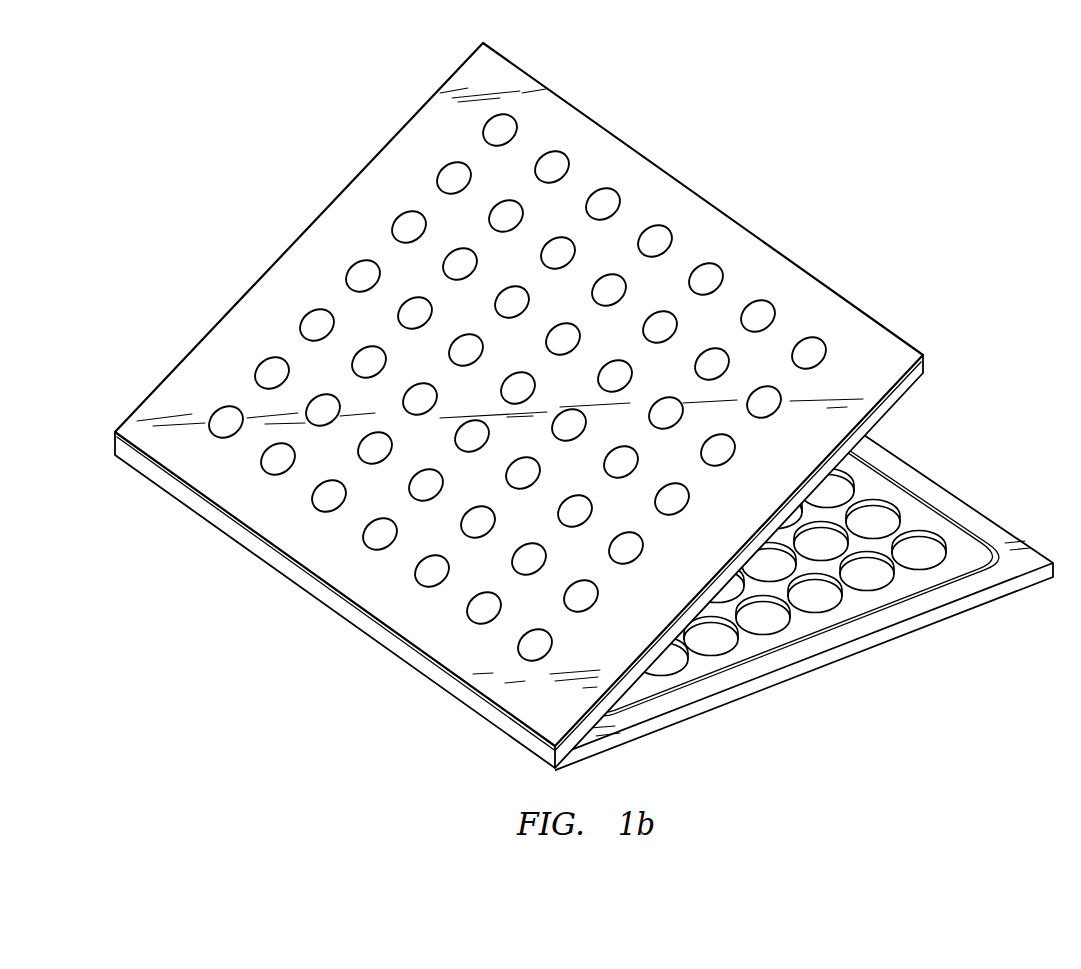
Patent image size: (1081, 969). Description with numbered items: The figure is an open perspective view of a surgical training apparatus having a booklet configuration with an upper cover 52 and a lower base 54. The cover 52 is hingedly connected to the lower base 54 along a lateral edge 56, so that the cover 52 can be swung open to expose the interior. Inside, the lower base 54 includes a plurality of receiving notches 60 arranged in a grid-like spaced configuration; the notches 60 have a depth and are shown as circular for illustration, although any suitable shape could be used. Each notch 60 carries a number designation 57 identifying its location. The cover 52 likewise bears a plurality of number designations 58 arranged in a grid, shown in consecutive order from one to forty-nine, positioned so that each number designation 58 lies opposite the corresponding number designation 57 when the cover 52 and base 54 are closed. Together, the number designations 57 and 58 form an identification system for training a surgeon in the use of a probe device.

The upper cover 52 is at (868, 340).
The lower base 54 is at (1013, 548).
The lateral edge 56 is at (408, 654).
The number designation 57 is at (820, 611).
The number designations 58 is at (803, 337).
The receiving notches 60 is at (938, 543).